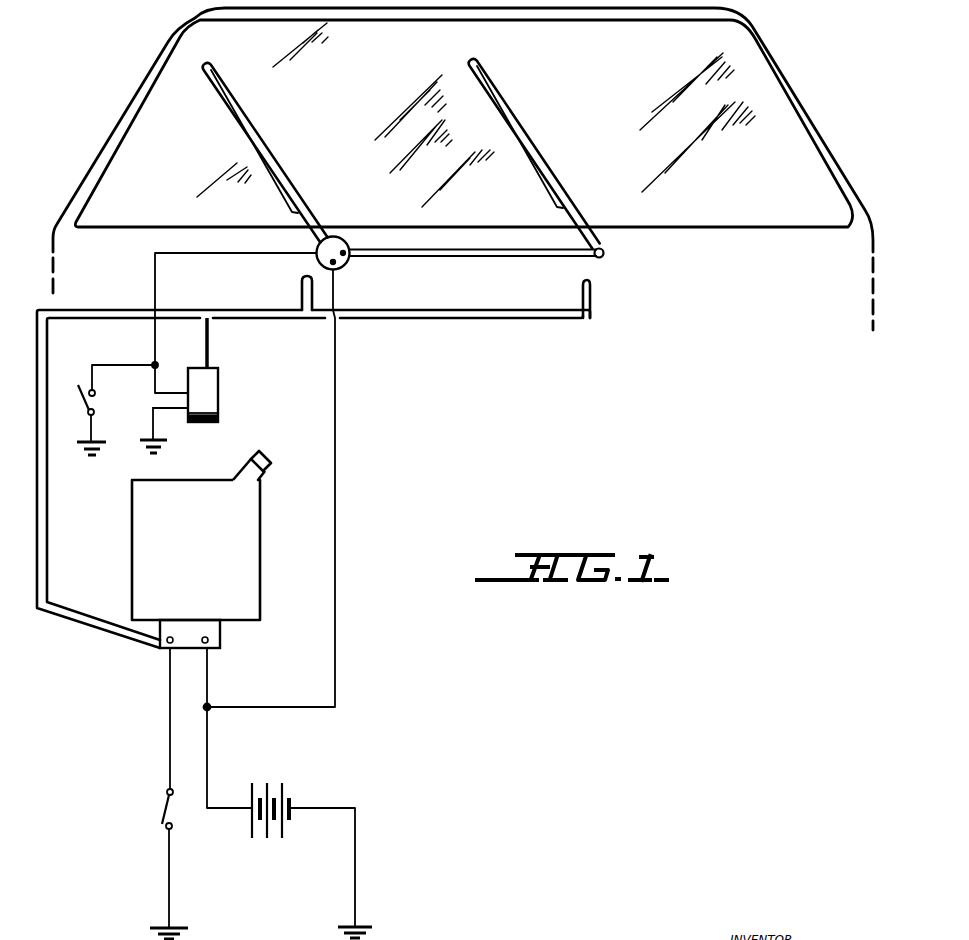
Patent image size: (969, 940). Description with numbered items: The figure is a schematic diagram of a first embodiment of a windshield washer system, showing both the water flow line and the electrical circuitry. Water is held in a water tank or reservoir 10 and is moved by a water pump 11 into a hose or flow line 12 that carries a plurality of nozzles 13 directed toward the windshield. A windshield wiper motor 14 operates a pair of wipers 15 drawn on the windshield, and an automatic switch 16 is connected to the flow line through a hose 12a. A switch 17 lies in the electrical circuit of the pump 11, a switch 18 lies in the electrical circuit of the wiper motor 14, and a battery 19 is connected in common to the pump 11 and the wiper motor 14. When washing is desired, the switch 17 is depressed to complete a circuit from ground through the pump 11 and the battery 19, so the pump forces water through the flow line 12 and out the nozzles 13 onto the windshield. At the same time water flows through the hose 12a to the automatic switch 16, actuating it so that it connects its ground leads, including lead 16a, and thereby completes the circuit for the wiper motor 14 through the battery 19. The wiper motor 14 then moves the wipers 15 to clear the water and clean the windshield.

The water tank or reservoir 10 is at (201, 535).
The water pump 11 is at (195, 647).
The hose or flow line 12 is at (48, 527).
The hose 12a is at (210, 342).
The nozzles 13 is at (300, 291).
The windshield wiper motor 14 is at (346, 259).
The wipers 15 is at (233, 122).
The automatic switch 16 is at (219, 398).
The ground lead 16a is at (176, 411).
The switch 17 is at (162, 805).
The switch 18 is at (82, 402).
The battery 19 is at (270, 842).